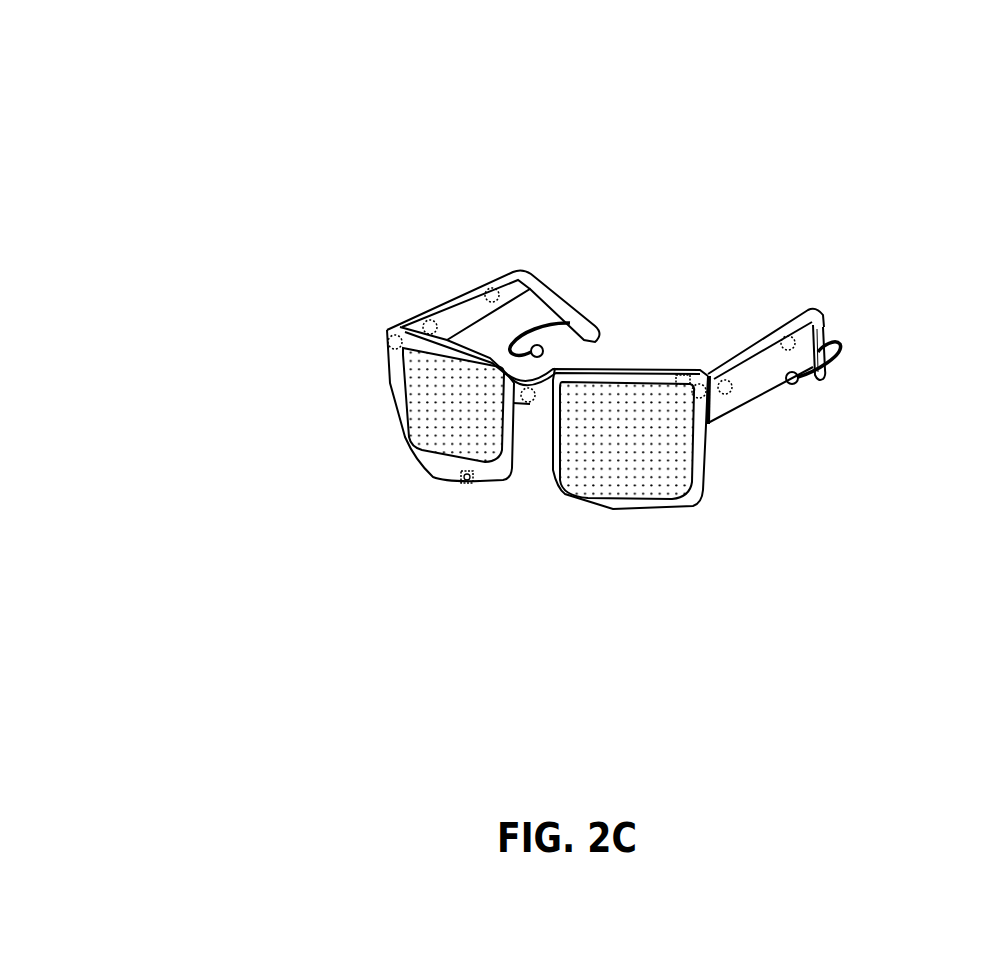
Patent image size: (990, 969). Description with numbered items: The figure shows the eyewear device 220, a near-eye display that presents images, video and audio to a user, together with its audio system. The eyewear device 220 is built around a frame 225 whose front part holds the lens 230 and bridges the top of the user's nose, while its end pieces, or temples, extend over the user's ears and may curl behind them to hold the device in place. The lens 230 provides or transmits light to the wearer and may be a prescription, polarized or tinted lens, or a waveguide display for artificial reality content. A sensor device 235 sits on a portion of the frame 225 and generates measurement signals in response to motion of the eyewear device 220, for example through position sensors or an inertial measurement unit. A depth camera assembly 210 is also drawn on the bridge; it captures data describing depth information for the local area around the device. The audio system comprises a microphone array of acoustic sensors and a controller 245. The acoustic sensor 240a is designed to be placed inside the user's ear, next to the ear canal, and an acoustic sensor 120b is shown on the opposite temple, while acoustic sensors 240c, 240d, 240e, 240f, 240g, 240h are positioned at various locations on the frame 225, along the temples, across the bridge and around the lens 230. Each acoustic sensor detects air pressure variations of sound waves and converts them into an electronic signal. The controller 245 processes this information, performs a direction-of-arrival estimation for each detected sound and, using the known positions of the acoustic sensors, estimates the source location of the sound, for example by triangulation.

The eyewear device 220 is at (62, 127).
The frame 225 is at (540, 277).
The lens 230 is at (420, 395).
The sensor device 235 is at (461, 478).
The depth camera assembly 210 is at (531, 402).
The controller 245 is at (682, 374).
The acoustic sensor 120b is at (540, 345).
The acoustic sensor 240a is at (799, 381).
The acoustic sensor 240c is at (792, 337).
The acoustic sensor 240d is at (490, 288).
The acoustic sensor 240e is at (431, 320).
The acoustic sensor 240f is at (388, 342).
The acoustic sensor 240g is at (702, 398).
The acoustic sensor 240h is at (729, 393).